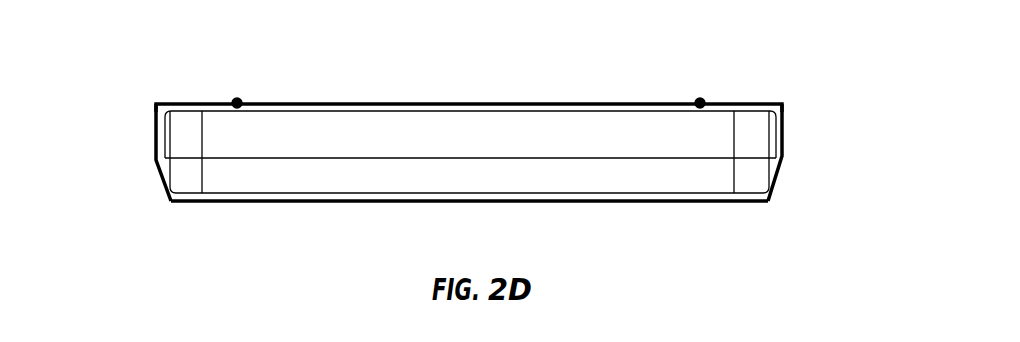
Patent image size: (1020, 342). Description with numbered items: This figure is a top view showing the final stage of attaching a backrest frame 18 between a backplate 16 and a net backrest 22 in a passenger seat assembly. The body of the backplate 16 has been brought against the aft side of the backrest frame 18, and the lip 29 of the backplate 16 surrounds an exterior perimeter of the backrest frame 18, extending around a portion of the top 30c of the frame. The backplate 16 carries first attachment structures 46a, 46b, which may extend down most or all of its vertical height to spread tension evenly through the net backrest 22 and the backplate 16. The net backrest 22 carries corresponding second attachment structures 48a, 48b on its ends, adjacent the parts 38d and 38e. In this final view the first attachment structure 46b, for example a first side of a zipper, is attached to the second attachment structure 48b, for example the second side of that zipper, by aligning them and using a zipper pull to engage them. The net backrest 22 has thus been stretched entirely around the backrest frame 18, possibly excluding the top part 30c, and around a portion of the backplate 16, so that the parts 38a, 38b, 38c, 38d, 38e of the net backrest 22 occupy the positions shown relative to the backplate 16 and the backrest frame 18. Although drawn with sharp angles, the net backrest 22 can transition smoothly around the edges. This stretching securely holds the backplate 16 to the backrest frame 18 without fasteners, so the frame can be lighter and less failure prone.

The backplate 16 is at (775, 122).
The backrest frame 18 is at (760, 186).
The net backrest 22 is at (565, 197).
The lip 29 is at (288, 130).
The top of the backrest frame 30c is at (233, 173).
The part of the net backrest 38a is at (347, 203).
The part of the net backrest 38b is at (784, 148).
The part of the net backrest 38c is at (153, 153).
The part of the net backrest 38d is at (177, 102).
The part of the net backrest 38e is at (738, 102).
The first attachment structure 46a is at (698, 103).
The first attachment structure 46b is at (239, 100).
The second attachment structure 48a is at (702, 100).
The second attachment structure 48b is at (235, 101).